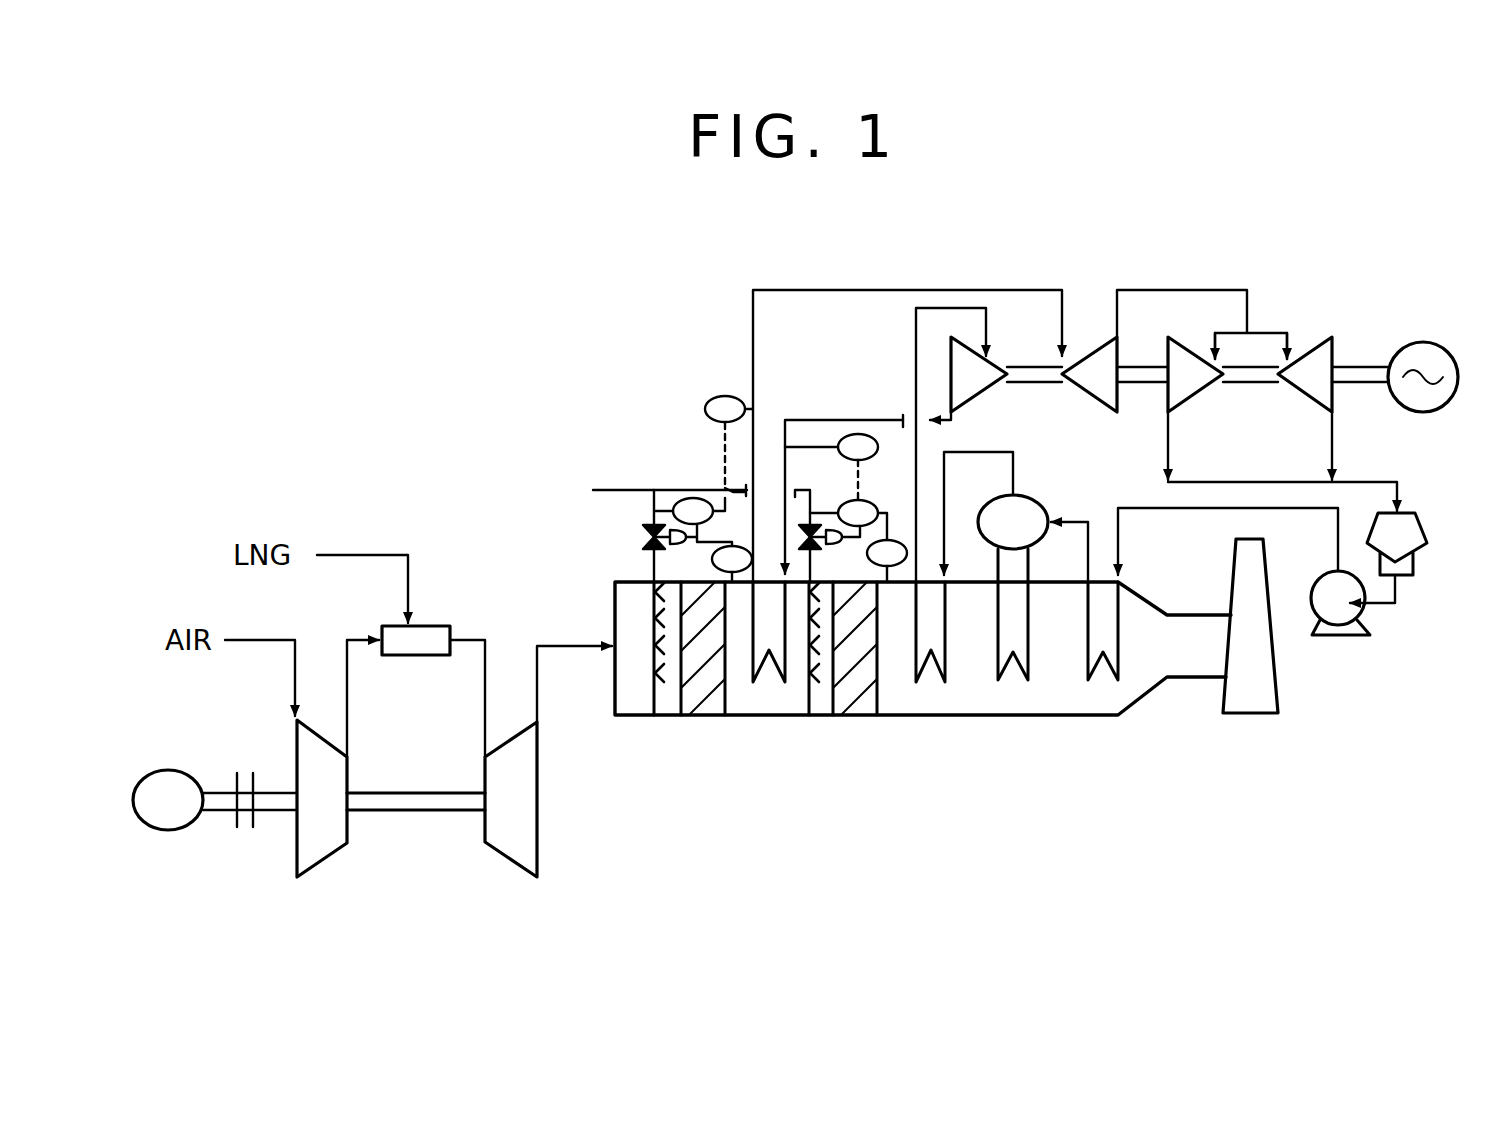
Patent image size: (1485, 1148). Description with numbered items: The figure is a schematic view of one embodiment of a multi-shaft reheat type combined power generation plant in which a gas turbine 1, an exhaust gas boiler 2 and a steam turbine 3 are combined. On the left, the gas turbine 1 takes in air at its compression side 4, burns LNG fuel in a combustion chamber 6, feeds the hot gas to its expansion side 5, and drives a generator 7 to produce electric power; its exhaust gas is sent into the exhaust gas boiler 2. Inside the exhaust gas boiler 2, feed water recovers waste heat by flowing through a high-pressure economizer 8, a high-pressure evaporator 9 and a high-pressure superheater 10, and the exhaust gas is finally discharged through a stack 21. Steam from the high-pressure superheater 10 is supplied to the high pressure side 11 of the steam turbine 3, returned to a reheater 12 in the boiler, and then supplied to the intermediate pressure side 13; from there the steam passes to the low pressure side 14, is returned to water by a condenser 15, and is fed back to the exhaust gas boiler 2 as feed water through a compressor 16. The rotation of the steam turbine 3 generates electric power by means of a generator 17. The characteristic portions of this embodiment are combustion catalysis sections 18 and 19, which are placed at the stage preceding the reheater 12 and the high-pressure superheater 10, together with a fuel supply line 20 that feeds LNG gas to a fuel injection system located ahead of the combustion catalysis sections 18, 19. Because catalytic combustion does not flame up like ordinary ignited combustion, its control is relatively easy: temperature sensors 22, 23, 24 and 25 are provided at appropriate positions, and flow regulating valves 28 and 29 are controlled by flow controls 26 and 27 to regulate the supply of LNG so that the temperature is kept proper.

The gas turbine 1 is at (470, 822).
The exhaust gas boiler 2 is at (736, 719).
The steam turbine 3 is at (1223, 289).
The compression side 4 is at (330, 857).
The expansion side 5 is at (538, 860).
The combustion chamber 6 is at (436, 626).
The generator 7 is at (170, 832).
The high-pressure economizer 8 is at (1118, 667).
The high-pressure evaporator 9 is at (1030, 662).
The high-pressure superheater 10 is at (935, 666).
The high pressure side 11 is at (992, 392).
The reheater 12 is at (777, 672).
The intermediate pressure side 13 is at (1078, 393).
The low pressure side 14 is at (1178, 345).
The condenser 15 is at (1410, 506).
The compressor 16 is at (1360, 637).
The generator 17 is at (1430, 343).
The combustion catalysis section 18 is at (690, 708).
The combustion catalysis section 19 is at (863, 712).
The fuel supply line 20 is at (613, 490).
The stack 21 is at (1278, 698).
The temperature sensor 22 is at (722, 396).
The temperature sensor 23 is at (853, 434).
The temperature sensor 24 is at (712, 560).
The temperature sensor 25 is at (889, 540).
The flow control 26 is at (862, 500).
The flow control 27 is at (690, 498).
The flow regulating valve 28 is at (643, 535).
The flow regulating valve 29 is at (812, 522).